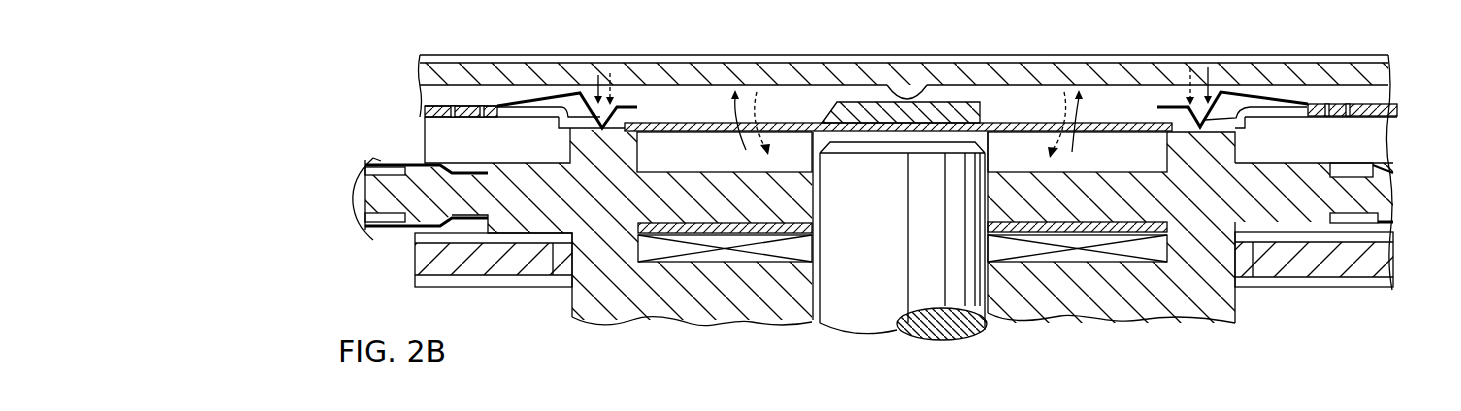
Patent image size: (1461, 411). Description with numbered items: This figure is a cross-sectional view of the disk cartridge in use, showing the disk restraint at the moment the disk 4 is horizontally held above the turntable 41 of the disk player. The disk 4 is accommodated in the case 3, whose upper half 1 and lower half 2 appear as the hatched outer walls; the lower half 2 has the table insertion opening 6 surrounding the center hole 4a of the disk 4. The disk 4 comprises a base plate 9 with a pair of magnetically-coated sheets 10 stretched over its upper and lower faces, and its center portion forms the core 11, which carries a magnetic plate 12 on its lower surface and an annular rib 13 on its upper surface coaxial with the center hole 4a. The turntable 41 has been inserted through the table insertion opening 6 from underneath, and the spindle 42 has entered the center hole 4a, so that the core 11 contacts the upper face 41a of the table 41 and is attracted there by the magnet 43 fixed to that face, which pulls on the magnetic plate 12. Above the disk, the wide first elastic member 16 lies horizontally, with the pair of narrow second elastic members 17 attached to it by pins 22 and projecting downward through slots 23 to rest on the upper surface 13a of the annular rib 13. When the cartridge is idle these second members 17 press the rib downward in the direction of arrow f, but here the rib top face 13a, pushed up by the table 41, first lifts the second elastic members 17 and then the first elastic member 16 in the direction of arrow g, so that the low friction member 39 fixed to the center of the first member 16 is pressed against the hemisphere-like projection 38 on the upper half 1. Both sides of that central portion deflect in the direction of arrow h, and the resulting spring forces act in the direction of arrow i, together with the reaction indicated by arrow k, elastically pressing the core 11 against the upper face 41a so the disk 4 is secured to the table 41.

The upper half 1 is at (1040, 75).
The lower half 2 is at (1320, 265).
The case 3 is at (1136, 44).
The disk 4 is at (445, 155).
The center hole 4a is at (812, 213).
The table insertion opening 6 is at (560, 272).
The base plate 9 is at (473, 205).
The magnetically-coated sheets 10 is at (377, 232).
The core 11 is at (720, 210).
The magnetic plate 12 is at (1080, 227).
The annular rib 13 is at (627, 148).
The upper surface of the annular rib 13a is at (648, 107).
The first elastic member 16 is at (800, 123).
The second elastic members 17 is at (538, 100).
The pins 22 is at (482, 105).
The slots 23 is at (537, 112).
The hemisphere-like projection 38 is at (905, 95).
The low friction member 39 is at (958, 112).
The turntable 41 is at (1227, 293).
The upper face of the table 41a is at (630, 242).
The spindle 42 is at (970, 275).
The magnet 43 is at (1147, 250).
The direction of elastic force of second elastic member f is at (611, 70).
The push-up direction g is at (596, 72).
The deflection direction h is at (733, 87).
The direction of elastic force of first elastic member i is at (759, 88).
The direction k is at (1082, 88).